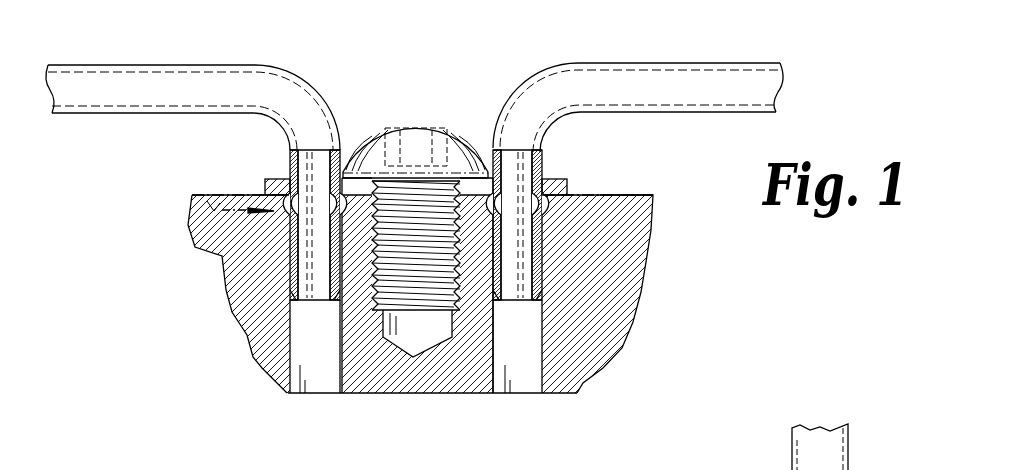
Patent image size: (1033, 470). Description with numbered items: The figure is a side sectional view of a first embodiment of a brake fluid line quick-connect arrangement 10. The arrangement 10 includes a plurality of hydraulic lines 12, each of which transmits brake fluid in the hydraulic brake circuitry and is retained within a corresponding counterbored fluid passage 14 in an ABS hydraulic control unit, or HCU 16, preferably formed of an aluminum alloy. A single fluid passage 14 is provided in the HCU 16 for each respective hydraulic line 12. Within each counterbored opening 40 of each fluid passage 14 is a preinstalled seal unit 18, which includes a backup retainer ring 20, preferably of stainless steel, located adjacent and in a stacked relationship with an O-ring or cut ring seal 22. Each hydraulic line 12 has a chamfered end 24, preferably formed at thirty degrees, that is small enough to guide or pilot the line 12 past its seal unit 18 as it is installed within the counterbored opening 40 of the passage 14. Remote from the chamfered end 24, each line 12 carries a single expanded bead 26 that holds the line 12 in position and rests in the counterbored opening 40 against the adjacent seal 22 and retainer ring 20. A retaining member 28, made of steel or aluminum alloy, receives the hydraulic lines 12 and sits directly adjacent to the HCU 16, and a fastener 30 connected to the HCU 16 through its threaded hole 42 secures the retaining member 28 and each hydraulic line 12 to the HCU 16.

The quick-connect arrangement 10 is at (473, 93).
The hydraulic line 12 is at (222, 77).
The counterbored fluid passage 14 is at (340, 374).
The ABS hydraulic control unit (HCU) 16 is at (265, 352).
The seal unit 18 is at (206, 207).
The backup retainer ring 20 is at (552, 202).
The O-ring or cut ring seal 22 is at (655, 200).
The chamfered end 24 is at (280, 305).
The expanded bead 26 is at (548, 192).
The retaining member 28 is at (280, 178).
The fastener 30 is at (383, 128).
The counterbored opening 40 is at (235, 250).
The threaded hole 42 is at (445, 300).